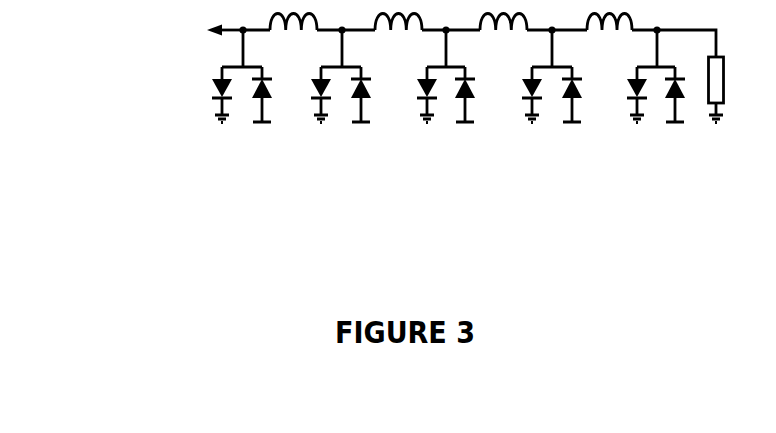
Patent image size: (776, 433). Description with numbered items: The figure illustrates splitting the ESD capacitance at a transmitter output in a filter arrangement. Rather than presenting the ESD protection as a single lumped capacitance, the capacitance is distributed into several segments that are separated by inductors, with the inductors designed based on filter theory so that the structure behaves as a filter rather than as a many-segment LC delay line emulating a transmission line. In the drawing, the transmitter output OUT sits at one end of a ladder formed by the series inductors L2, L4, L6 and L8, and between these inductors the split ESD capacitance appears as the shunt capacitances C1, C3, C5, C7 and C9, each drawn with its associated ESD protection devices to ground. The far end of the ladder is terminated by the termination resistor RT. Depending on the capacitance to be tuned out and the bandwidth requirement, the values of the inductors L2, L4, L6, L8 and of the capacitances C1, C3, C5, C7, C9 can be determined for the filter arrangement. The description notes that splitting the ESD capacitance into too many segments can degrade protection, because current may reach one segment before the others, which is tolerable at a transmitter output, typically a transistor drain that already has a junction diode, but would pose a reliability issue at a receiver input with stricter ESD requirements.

The output terminal OUT is at (201, 30).
The inductor L2 is at (293, 15).
The inductor L4 is at (398, 15).
The inductor L6 is at (503, 15).
The inductor L8 is at (609, 15).
The varactor capacitor C1 is at (210, 95).
The varactor capacitor C3 is at (308, 95).
The varactor capacitor C5 is at (413, 95).
The varactor capacitor C7 is at (518, 95).
The varactor capacitor C9 is at (623, 95).
The termination resistor RT is at (706, 76).